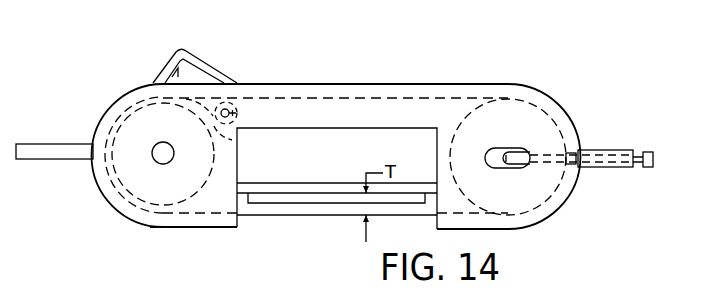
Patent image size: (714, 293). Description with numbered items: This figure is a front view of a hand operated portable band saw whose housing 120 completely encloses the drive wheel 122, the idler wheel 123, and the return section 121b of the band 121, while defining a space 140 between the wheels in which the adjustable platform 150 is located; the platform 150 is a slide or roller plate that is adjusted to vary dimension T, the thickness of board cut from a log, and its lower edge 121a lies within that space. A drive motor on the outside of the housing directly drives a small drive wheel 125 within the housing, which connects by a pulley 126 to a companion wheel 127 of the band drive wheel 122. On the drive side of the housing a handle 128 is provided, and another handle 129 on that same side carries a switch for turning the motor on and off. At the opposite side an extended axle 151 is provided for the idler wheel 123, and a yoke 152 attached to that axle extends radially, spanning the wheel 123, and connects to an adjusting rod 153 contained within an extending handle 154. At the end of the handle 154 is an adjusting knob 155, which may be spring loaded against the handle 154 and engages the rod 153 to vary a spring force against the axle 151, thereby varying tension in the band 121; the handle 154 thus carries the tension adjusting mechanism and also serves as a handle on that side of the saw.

The housing 120 is at (297, 83).
The band 121 is at (202, 216).
The bottom wall plate 121a is at (275, 217).
The return section of the band 121b is at (397, 93).
The drive wheel 122 is at (120, 208).
The idler wheel 123 is at (545, 208).
The small drive wheel 125 is at (238, 103).
The pulley 126 is at (228, 134).
The companion wheel 127 is at (97, 178).
The handle 128 is at (30, 143).
The handle 129 is at (185, 49).
The space 140 is at (403, 150).
The adjustable platform 150 is at (273, 182).
The extended axle 151 is at (505, 150).
The yoke 152 is at (572, 127).
The adjusting rod 153 is at (621, 150).
The extending handle 154 is at (618, 167).
The adjusting knob 155 is at (653, 153).